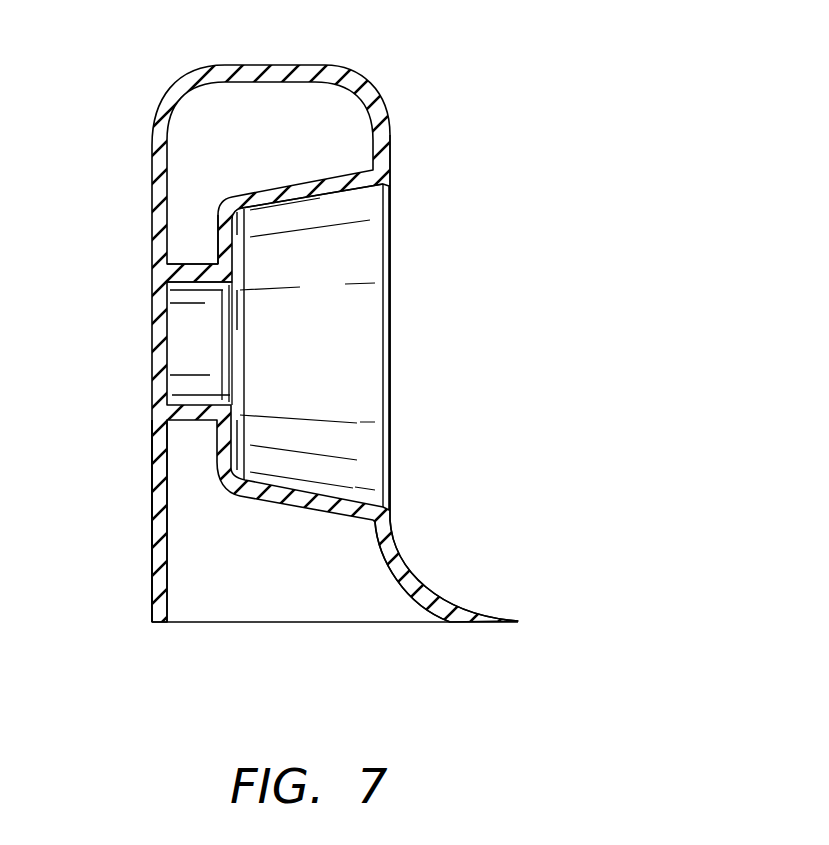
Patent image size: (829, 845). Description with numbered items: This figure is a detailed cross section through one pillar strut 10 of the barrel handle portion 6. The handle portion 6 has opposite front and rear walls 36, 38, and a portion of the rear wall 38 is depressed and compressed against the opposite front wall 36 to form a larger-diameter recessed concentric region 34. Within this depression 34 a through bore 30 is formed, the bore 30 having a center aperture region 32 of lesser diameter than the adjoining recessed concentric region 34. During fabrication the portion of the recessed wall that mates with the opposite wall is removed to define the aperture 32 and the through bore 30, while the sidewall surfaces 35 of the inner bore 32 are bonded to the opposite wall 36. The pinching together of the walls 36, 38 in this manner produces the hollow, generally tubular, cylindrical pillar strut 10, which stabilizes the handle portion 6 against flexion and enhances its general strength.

The handle portion 6 is at (172, 92).
The pillar strut 10 is at (130, 392).
The through bore 30 is at (178, 352).
The center aperture region 32 is at (178, 313).
The recessed concentric region 34 is at (368, 327).
The sidewall surfaces 35 is at (193, 280).
The front wall 36 is at (150, 542).
The rear wall 38 is at (413, 573).